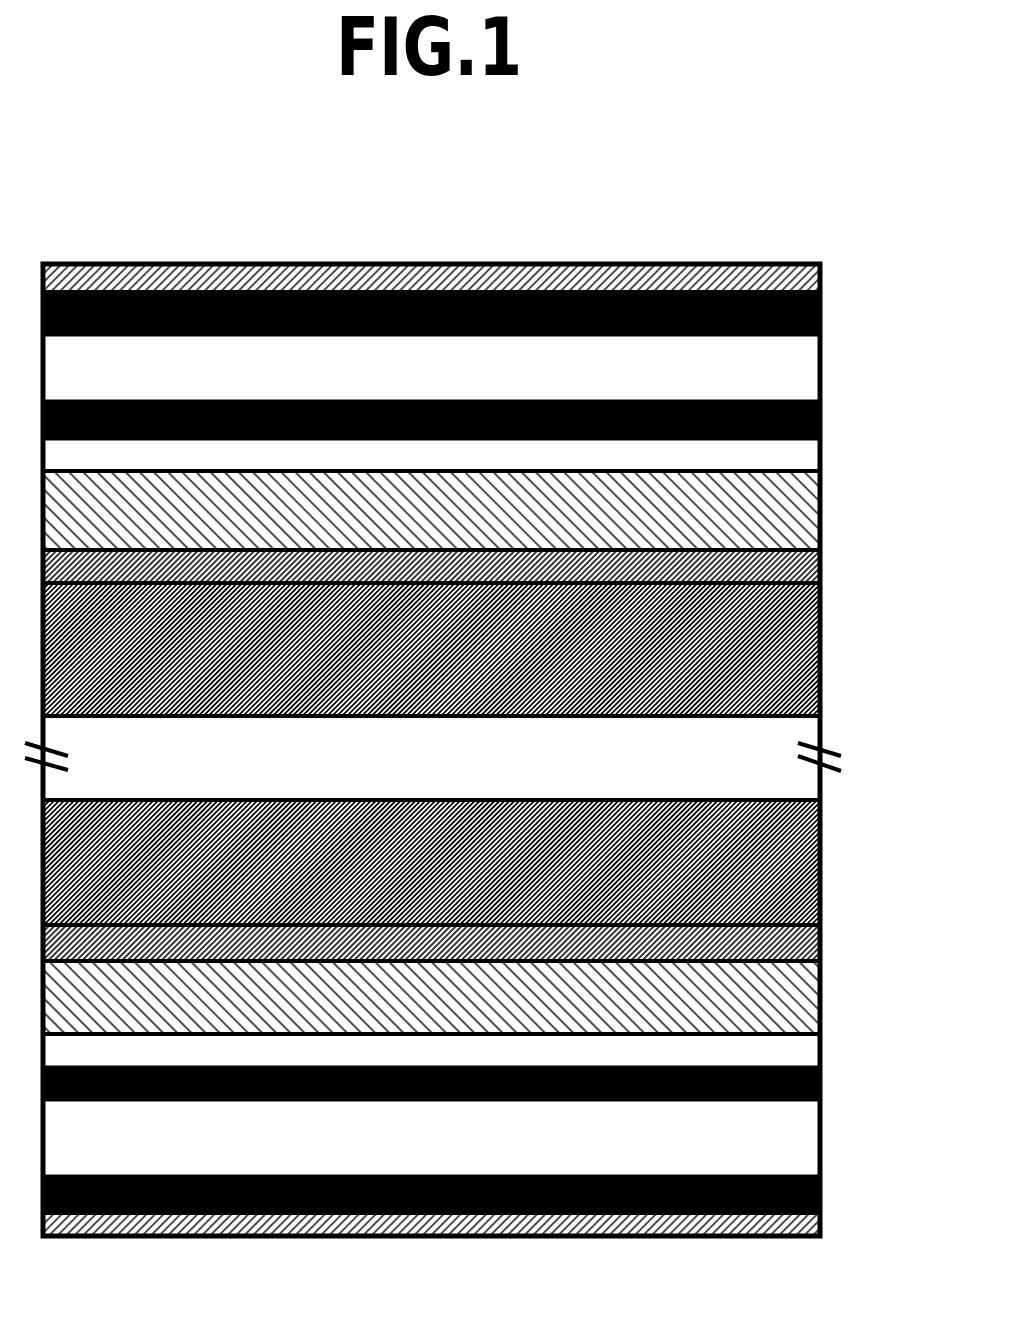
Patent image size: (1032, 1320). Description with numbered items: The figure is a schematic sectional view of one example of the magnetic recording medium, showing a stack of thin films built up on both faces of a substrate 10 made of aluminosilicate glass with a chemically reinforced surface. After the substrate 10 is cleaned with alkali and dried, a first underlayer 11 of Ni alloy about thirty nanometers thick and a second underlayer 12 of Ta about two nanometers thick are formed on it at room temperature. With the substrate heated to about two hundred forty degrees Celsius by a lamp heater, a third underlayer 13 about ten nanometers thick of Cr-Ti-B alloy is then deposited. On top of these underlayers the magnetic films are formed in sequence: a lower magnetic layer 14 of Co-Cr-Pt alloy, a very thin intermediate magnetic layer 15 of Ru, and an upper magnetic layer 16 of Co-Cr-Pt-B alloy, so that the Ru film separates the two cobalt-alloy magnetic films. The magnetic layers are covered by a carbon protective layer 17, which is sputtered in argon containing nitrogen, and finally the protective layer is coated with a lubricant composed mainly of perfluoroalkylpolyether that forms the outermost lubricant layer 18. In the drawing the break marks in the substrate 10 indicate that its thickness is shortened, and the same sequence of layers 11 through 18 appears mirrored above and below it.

The substrate 10 is at (782, 773).
The first underlayer 11 is at (812, 642).
The second underlayer 12 is at (812, 558).
The third underlayer 13 is at (783, 505).
The lower magnetic layer 14 is at (783, 452).
The intermediate magnetic layer 15 is at (812, 403).
The upper magnetic layer 16 is at (783, 357).
The carbon protective layer 17 is at (812, 307).
The lubricant layer 18 is at (812, 268).